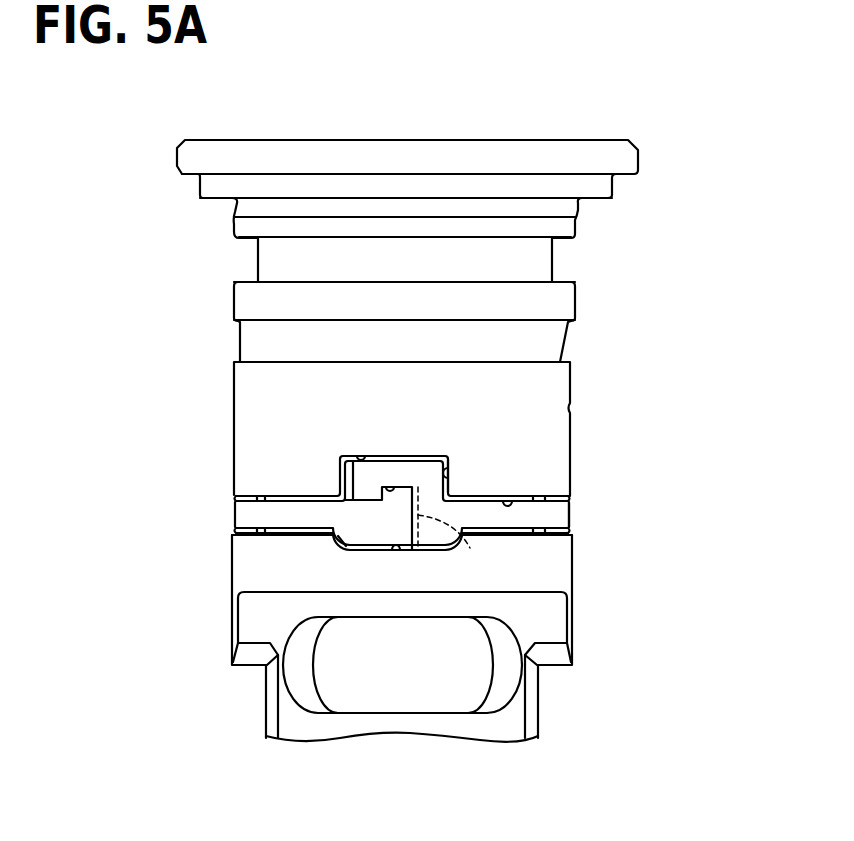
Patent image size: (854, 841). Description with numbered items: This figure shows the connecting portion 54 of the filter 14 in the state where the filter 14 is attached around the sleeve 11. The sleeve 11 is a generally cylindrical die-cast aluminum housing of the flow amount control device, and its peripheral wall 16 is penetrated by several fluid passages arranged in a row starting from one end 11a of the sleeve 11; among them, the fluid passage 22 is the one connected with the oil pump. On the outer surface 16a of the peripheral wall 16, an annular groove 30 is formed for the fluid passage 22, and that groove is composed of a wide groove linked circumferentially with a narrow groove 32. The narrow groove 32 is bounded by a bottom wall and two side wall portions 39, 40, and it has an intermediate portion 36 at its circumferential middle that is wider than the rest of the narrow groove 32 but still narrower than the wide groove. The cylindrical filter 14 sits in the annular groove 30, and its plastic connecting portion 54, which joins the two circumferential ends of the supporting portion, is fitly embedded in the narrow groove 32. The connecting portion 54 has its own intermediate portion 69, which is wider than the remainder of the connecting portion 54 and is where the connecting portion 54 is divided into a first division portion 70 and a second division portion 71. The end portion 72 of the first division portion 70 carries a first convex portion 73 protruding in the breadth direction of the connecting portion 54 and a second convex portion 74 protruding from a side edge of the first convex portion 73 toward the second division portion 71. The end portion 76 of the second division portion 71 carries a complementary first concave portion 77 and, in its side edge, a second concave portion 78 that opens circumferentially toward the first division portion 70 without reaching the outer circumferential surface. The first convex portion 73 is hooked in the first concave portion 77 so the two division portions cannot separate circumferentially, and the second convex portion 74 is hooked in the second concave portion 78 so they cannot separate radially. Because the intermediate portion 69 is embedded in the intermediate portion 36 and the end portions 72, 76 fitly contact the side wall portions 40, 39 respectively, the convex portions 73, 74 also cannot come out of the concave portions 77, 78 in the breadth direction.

The sleeve 11 is at (648, 130).
The one end of the sleeve 11a is at (190, 165).
The filter 14 is at (593, 517).
The peripheral wall 16 is at (570, 415).
The outer surface of the peripheral wall 16a is at (247, 560).
The fluid passage 22 is at (443, 620).
The annular groove 30 is at (295, 528).
The narrow groove 32 is at (537, 499).
The intermediate portion of the narrow groove 36 is at (455, 457).
The side wall portion of the narrow groove 39 is at (350, 455).
The side wall portion of the narrow groove 40 is at (395, 543).
The connecting portion 54 is at (322, 510).
The intermediate portion of the connecting portion 69 is at (395, 443).
The first division portion 70 is at (253, 508).
The second division portion 71 is at (530, 537).
The end portion of the first division portion 72 is at (378, 541).
The first convex portion 73 is at (403, 482).
The second convex portion 74 is at (418, 497).
The end portion of the second division portion 76 is at (430, 467).
The first concave portion 77 is at (388, 484).
The second concave portion 78 is at (470, 548).